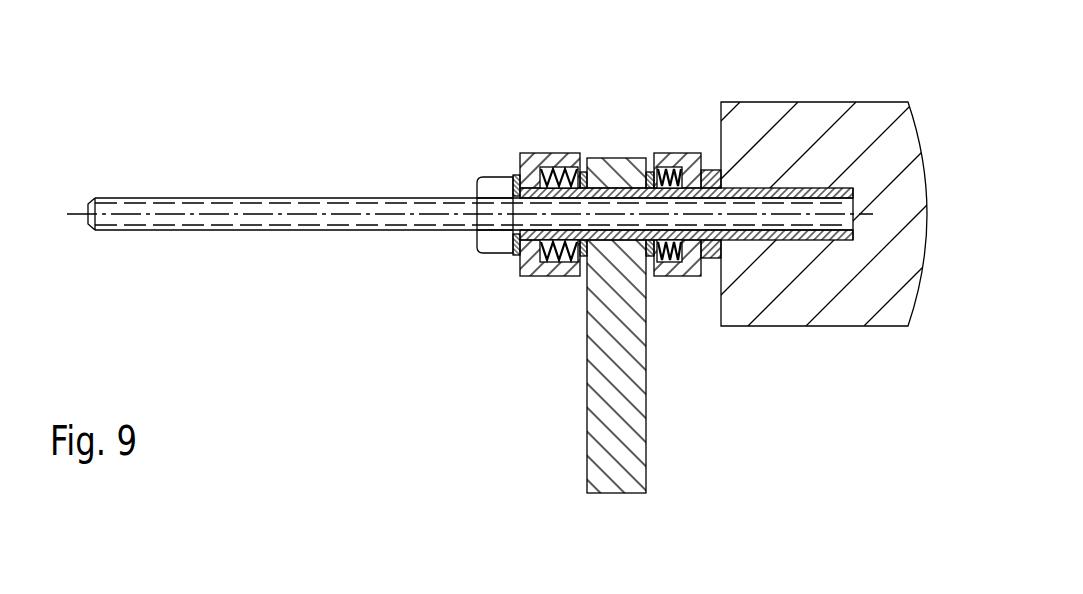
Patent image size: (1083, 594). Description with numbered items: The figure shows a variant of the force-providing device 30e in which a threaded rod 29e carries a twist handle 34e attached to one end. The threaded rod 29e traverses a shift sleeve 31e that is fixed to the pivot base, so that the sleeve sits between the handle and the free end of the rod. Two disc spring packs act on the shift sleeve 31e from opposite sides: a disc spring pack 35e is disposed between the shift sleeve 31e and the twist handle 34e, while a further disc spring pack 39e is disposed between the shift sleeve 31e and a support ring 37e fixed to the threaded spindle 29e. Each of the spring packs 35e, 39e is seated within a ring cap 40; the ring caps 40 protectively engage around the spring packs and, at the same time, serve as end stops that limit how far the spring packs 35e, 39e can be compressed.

The threaded rod 29e is at (220, 198).
The adjusting device 30e is at (545, 360).
The shift sleeve 31e is at (617, 158).
The twist handle 34e is at (827, 102).
The disc spring pack 35e is at (678, 153).
The support ring 37e is at (517, 176).
The disc spring pack 39e is at (560, 153).
The ring cap 40 is at (542, 277).